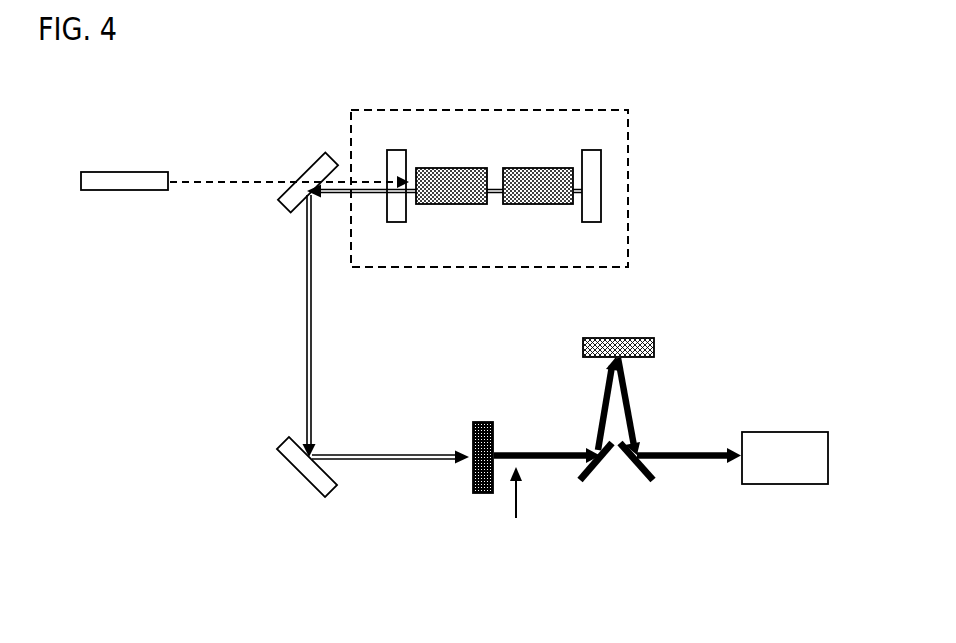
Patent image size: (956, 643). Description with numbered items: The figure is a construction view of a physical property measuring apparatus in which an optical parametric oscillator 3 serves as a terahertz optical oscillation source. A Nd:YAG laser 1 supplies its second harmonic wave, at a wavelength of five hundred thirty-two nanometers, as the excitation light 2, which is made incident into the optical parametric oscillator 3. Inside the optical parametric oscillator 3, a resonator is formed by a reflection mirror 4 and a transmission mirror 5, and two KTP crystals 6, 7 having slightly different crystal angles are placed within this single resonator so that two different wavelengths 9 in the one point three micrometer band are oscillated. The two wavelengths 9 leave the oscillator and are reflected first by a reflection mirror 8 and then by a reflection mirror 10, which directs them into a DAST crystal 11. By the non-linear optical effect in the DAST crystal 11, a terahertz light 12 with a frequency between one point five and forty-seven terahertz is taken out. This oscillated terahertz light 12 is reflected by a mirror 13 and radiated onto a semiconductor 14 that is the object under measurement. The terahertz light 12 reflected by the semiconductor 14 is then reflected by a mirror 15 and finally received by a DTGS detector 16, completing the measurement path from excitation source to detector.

The Nd:YAG laser 1 is at (143, 172).
The excitation light 2 is at (233, 182).
The optical parametric oscillator 3 is at (458, 109).
The reflection mirror 4 is at (592, 150).
The transmission mirror 5 is at (398, 222).
The KTP crystal 6 is at (460, 168).
The KTP crystal 7 is at (550, 204).
The reflection mirror 8 is at (283, 210).
The two wavelengths 9 is at (310, 310).
The reflection mirror 10 is at (288, 468).
The DAST crystal 11 is at (485, 420).
The terahertz light 12 is at (515, 507).
The mirror 13 is at (588, 478).
The semiconductor 14 is at (642, 333).
The mirror 15 is at (645, 478).
The DTGS detector 16 is at (788, 431).